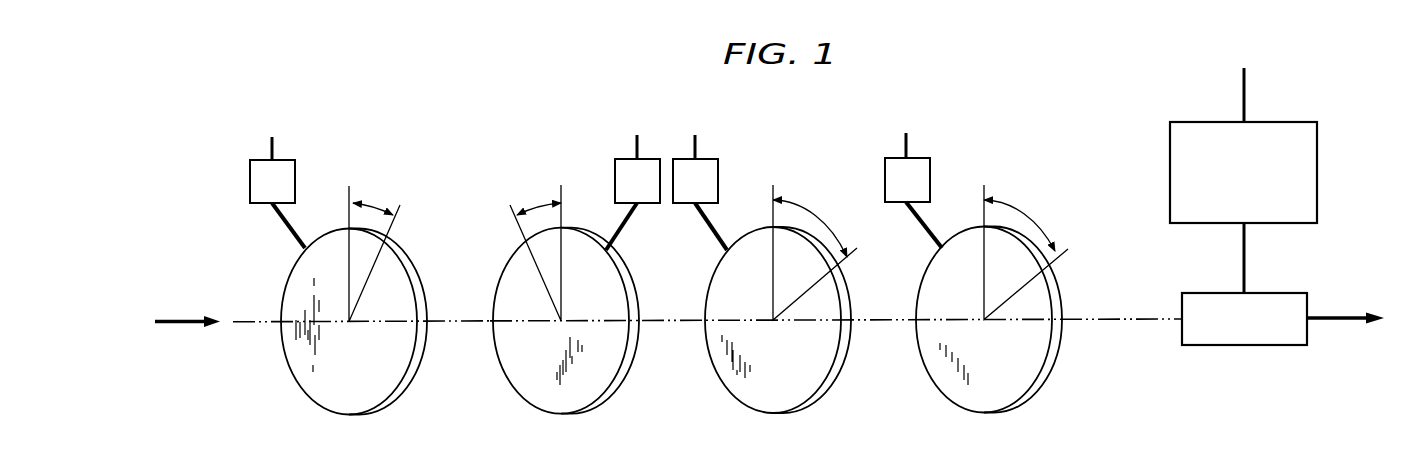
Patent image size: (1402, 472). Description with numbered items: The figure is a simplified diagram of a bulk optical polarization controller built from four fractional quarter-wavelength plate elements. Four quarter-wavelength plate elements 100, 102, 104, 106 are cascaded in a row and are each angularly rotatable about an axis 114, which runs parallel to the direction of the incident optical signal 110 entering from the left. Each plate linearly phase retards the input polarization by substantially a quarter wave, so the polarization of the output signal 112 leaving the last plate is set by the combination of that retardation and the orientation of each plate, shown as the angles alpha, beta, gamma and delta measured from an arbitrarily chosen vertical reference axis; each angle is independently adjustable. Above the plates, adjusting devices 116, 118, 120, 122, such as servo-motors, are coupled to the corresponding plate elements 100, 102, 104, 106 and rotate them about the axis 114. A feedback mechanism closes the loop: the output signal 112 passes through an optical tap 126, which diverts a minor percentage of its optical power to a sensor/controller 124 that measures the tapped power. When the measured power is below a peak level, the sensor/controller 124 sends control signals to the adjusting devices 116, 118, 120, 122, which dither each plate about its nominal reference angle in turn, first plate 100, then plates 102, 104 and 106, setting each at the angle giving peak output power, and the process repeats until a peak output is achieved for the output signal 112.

The quarter-wavelength plate element 100 is at (334, 412).
The quarter-wavelength plate element 102 is at (546, 412).
The quarter-wavelength plate element 104 is at (759, 412).
The quarter-wavelength plate element 106 is at (969, 412).
The incident optical signal 110 is at (180, 325).
The output signal 112 is at (1133, 322).
The axis 114 is at (265, 325).
The adjusting device 116 is at (250, 181).
The adjusting device 118 is at (615, 172).
The adjusting device 120 is at (718, 177).
The adjusting device 122 is at (885, 180).
The sensor/controller 124 is at (1288, 122).
The optical tap 126 is at (1288, 293).